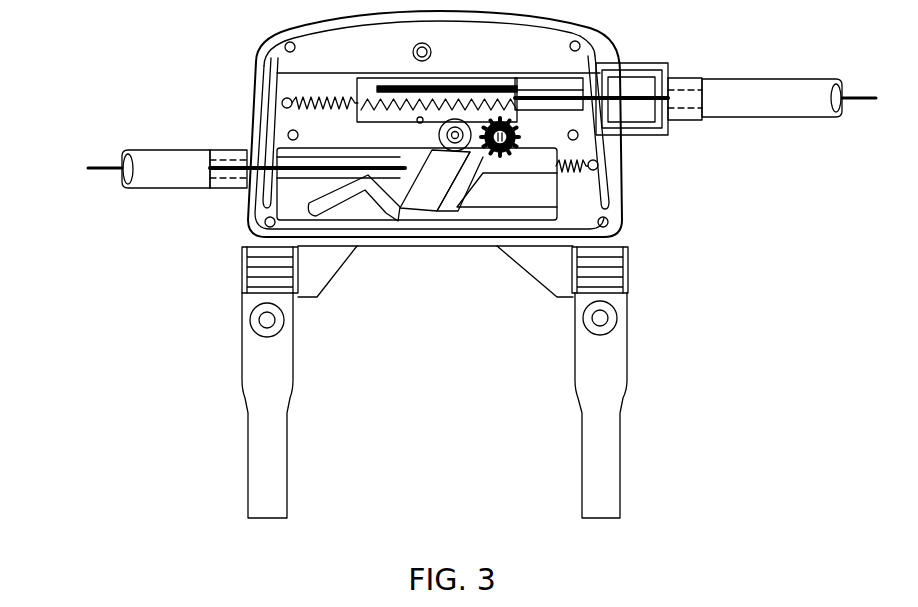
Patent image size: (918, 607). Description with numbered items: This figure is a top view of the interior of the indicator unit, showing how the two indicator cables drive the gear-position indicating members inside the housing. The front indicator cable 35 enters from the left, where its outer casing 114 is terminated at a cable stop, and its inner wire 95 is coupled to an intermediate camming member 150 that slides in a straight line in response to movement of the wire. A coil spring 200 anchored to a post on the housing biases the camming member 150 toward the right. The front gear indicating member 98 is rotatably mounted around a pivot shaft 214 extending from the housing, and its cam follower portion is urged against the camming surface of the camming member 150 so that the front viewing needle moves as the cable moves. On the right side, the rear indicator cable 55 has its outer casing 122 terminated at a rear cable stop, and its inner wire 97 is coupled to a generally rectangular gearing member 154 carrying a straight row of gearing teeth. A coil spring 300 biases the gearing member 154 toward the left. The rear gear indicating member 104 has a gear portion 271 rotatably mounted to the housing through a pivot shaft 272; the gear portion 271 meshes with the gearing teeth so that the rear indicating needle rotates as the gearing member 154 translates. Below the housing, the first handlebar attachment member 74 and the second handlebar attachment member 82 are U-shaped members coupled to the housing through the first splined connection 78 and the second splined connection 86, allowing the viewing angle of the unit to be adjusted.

The front indicator cable 35 is at (123, 150).
The rear indicator cable 55 is at (729, 68).
The first handlebar attachment member 74 is at (585, 341).
The first splined connection 78 is at (615, 262).
The second handlebar attachment member 82 is at (247, 346).
The second splined connection 86 is at (253, 263).
The inner wire 95 is at (224, 160).
The inner wire 97 is at (630, 96).
The front gear indicating member 98 is at (312, 204).
The rear gear indicating member 104 is at (484, 177).
The outer casing 114 is at (149, 165).
The outer casing 122 is at (774, 90).
The camming member 150 is at (496, 205).
The gearing member 154 is at (371, 82).
The coil spring 200 is at (593, 152).
The pivot shaft 214 is at (438, 131).
The gear portion 271 is at (520, 147).
The pivot shaft 272 is at (521, 137).
The coil spring 300 is at (296, 96).